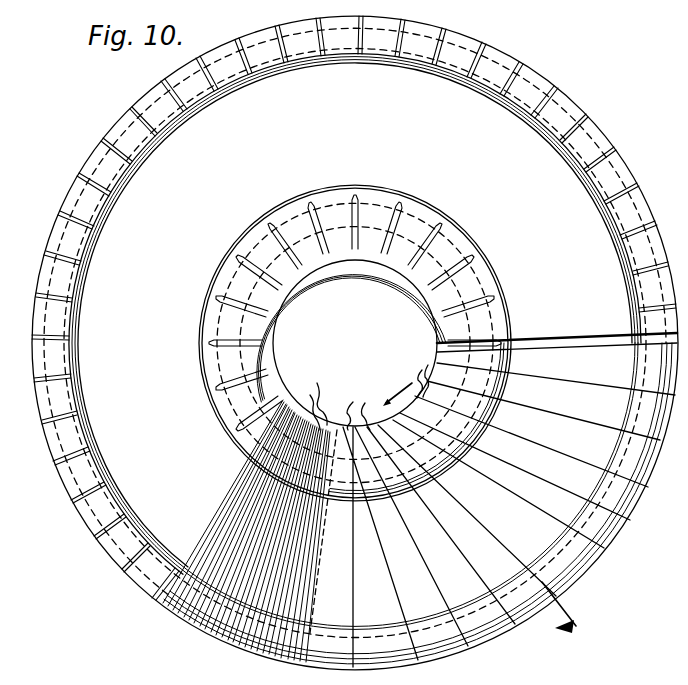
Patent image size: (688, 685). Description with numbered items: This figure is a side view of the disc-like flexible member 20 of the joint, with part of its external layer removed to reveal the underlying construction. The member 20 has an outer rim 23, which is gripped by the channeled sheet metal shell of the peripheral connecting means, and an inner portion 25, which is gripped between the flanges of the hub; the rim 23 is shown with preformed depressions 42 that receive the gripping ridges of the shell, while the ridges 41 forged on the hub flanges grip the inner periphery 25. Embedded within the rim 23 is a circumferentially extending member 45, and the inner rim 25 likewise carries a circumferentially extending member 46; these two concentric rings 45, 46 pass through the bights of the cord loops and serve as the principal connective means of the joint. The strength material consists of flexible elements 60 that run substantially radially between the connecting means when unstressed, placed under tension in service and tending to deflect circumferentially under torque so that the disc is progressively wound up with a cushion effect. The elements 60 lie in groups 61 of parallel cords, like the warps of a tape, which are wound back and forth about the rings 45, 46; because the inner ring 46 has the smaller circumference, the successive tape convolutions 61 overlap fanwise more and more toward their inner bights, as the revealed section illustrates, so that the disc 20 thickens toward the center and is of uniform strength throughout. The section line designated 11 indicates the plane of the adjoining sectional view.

The flexible member 20 is at (355, 343).
The depressions 42 is at (611, 163).
The embedded circumferential member 45 is at (557, 86).
The rim 23 is at (601, 558).
The inner circumferential member 46 is at (448, 239).
The inner portion 25 is at (423, 297).
The ridges 41 is at (395, 222).
The flexible strength elements 60 is at (552, 346).
The cord tape groups 61 is at (428, 365).
The section line arrows 11 is at (484, 502).